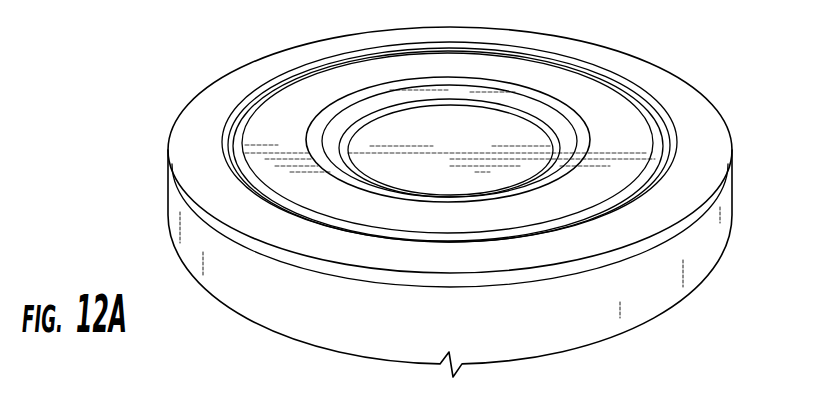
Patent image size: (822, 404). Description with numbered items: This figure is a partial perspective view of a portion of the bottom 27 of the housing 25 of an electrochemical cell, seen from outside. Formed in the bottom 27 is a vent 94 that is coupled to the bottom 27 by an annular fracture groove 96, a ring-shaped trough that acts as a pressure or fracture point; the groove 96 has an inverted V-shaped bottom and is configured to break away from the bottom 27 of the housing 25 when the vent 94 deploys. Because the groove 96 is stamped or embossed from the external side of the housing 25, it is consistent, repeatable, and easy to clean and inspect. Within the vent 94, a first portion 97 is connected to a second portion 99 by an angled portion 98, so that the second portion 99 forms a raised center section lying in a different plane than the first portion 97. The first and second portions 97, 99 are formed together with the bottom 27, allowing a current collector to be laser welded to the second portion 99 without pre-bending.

The housing 25 is at (175, 227).
The bottom 27 is at (712, 146).
The vent 94 is at (456, 50).
The annular fracture groove 96 is at (668, 145).
The first portion 97 is at (637, 127).
The angled portion 98 is at (563, 128).
The second portion 99 is at (487, 130).